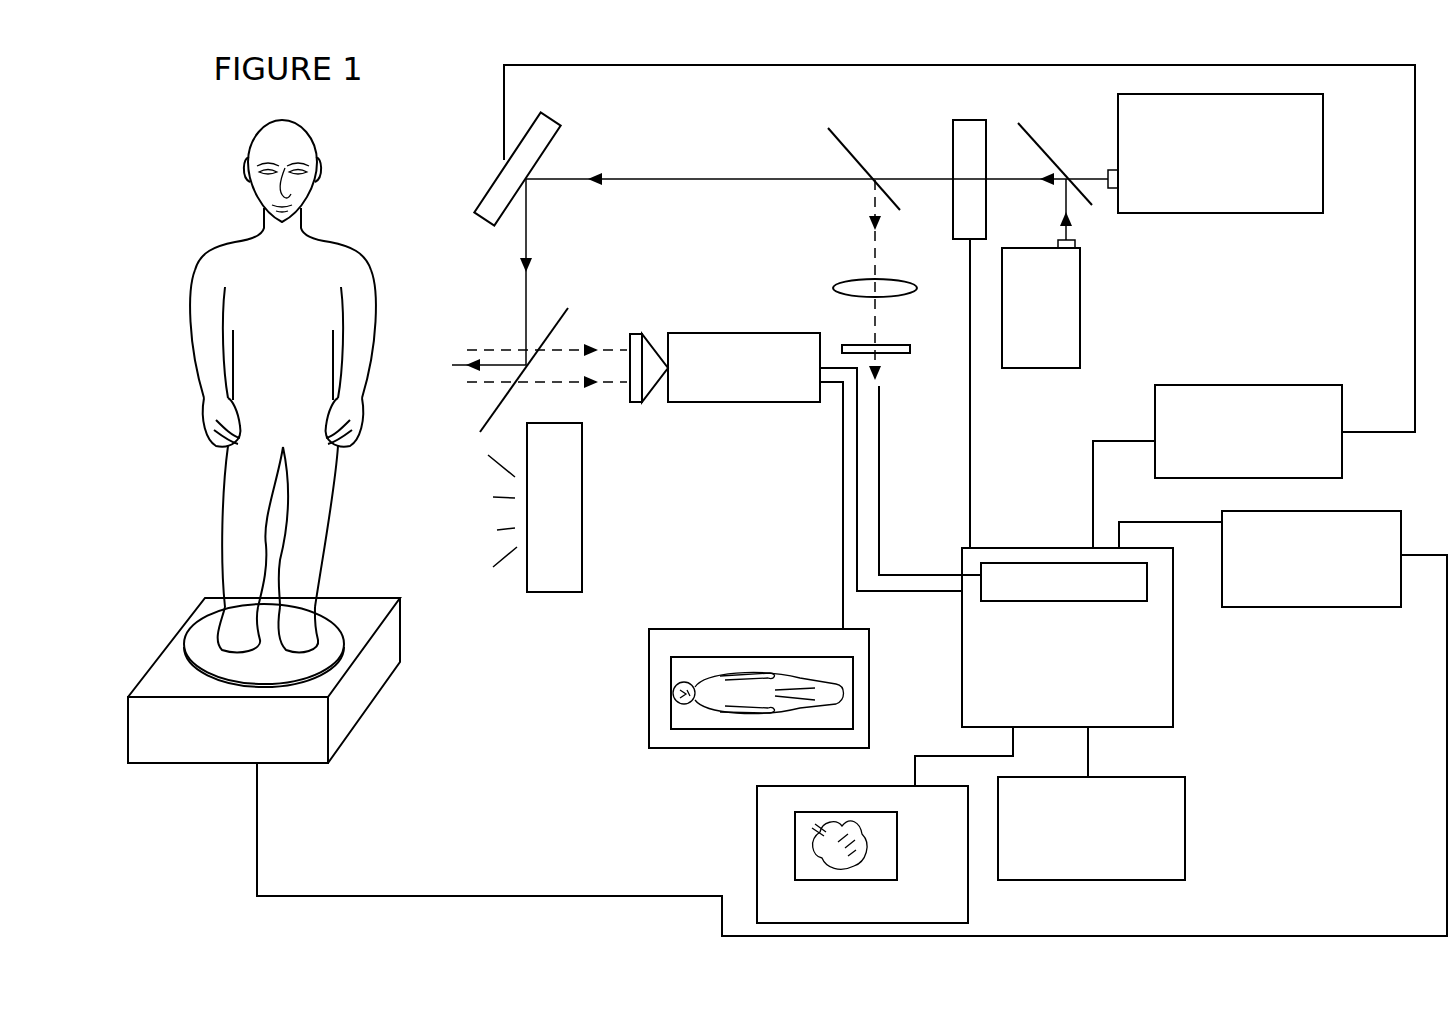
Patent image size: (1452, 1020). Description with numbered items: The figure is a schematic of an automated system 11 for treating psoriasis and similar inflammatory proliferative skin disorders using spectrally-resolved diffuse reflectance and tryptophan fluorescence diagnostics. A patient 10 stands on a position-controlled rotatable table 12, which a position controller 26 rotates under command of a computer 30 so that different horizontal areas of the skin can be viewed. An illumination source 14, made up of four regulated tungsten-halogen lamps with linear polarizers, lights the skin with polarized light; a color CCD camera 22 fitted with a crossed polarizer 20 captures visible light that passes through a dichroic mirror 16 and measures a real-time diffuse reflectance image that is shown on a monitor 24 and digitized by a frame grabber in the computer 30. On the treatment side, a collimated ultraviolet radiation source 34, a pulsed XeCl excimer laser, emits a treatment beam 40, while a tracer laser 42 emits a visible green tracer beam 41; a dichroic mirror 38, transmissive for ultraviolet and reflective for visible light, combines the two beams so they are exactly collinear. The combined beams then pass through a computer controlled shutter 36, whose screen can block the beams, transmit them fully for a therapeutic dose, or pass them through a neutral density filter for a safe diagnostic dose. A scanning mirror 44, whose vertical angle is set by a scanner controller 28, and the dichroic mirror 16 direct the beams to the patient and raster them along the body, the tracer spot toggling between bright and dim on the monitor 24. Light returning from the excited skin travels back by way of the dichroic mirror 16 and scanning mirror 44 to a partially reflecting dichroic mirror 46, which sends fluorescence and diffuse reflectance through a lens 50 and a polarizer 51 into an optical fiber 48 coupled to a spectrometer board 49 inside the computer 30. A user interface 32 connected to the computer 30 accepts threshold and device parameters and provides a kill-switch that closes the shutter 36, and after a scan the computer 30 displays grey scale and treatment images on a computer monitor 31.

The patient 10 is at (210, 250).
The automated system 11 is at (205, 818).
The position-controlled rotatable table 12 is at (316, 750).
The illumination source 14 is at (576, 458).
The dichroic mirror 16 is at (567, 310).
The polarizer 20 is at (636, 405).
The color CCD camera 22 is at (787, 389).
The monitor 24 is at (704, 745).
The position controller 26 is at (1322, 596).
The scanner controller 28 is at (1322, 387).
The computer 30 is at (1170, 688).
The computer monitor 31 is at (780, 848).
The user interface 32 is at (1180, 800).
The collimated ultraviolet radiation source 34 is at (1312, 167).
The computer controlled shutter 36 is at (963, 120).
The dichroic mirror 38 is at (1035, 137).
The treatment beam 40 is at (1076, 178).
The tracer beam 41 is at (527, 240).
The tracer laser 42 is at (1073, 348).
The scanning mirror 44 is at (546, 127).
The partially reflecting dichroic mirror 46 is at (845, 145).
The optical fiber 48 is at (880, 470).
The spectrometer board 49 is at (1053, 600).
The lens 50 is at (850, 278).
The polarizer 51 is at (860, 345).